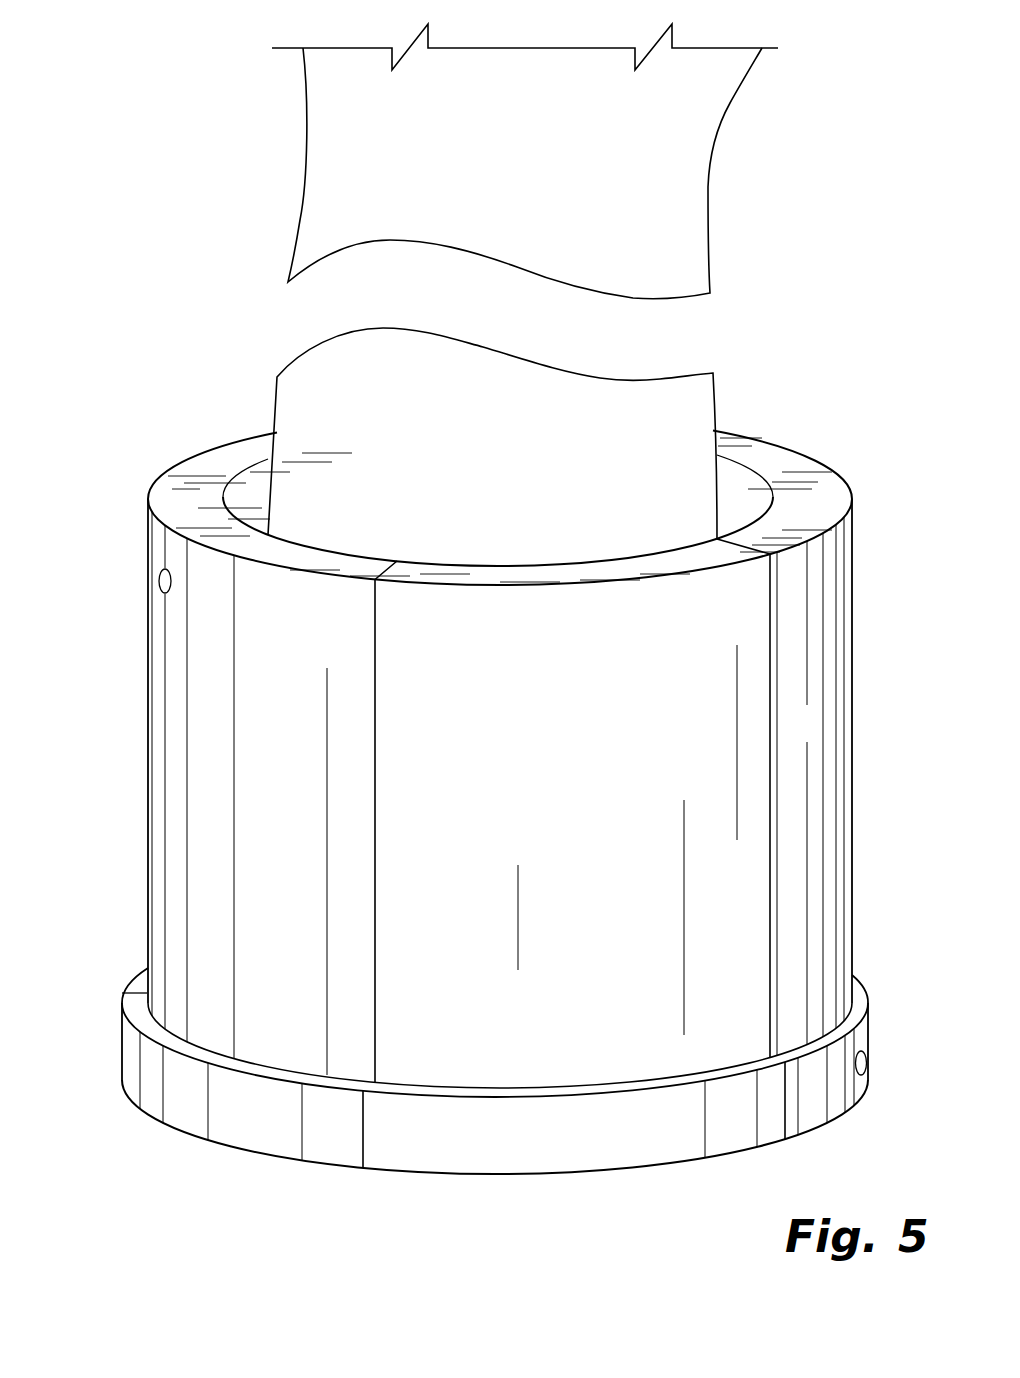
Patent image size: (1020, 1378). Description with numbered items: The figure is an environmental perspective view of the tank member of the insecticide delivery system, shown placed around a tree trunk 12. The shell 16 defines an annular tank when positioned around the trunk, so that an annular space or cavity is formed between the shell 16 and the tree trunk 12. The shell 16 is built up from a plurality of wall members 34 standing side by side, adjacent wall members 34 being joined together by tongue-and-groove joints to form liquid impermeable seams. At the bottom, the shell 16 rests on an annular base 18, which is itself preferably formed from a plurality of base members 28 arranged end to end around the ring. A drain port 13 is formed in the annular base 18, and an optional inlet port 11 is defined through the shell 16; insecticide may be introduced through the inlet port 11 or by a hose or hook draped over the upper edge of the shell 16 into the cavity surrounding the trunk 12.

The inlet port 11 is at (158, 577).
The tree trunk 12 is at (420, 444).
The drain port 13 is at (867, 1063).
The shell 16 is at (148, 772).
The annular base 18 is at (122, 1037).
The base member 28 is at (835, 1102).
The wall member 34 is at (817, 743).